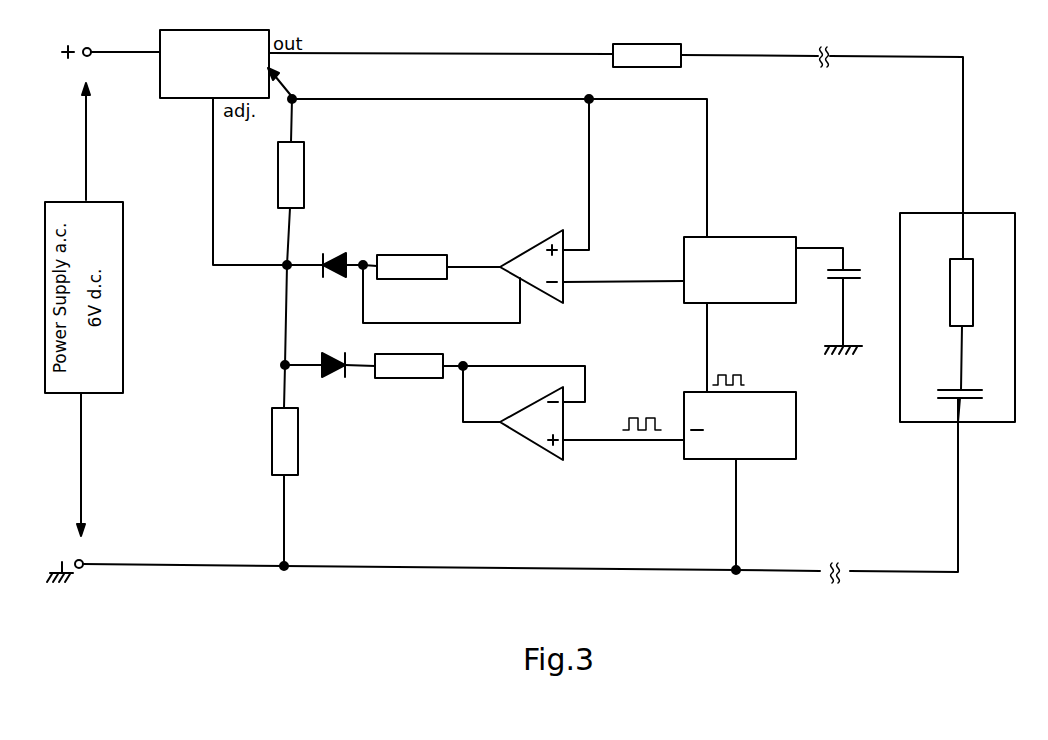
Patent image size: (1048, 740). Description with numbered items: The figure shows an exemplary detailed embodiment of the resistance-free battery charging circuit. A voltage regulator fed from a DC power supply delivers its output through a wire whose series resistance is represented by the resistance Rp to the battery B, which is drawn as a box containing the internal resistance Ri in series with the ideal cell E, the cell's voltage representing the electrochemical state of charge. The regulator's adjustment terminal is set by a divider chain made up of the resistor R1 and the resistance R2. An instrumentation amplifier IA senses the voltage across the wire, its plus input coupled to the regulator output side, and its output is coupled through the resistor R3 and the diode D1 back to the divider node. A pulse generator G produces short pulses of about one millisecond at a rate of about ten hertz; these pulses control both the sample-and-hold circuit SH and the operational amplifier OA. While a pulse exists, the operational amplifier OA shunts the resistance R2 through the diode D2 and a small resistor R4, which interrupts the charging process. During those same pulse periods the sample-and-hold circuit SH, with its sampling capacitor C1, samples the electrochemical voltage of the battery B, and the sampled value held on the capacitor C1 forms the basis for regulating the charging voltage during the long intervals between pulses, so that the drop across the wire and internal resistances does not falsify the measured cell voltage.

The resistor R1 is at (293, 192).
The resistance R2 is at (292, 450).
The resistor R3 is at (407, 262).
The small resistor R4 is at (396, 363).
The series resistance of the wire Rp is at (668, 30).
The internal resistance of the battery Ri is at (972, 292).
The diode D1 is at (331, 254).
The diode D2 is at (332, 354).
The instrumentation amplifier IA is at (545, 250).
The operational amplifier OA is at (527, 425).
The sample-and-hold circuit SH is at (735, 248).
The sampling capacitor C1 is at (859, 308).
The pulse generator G is at (786, 437).
The battery B is at (969, 317).
The ideal cell E is at (946, 396).